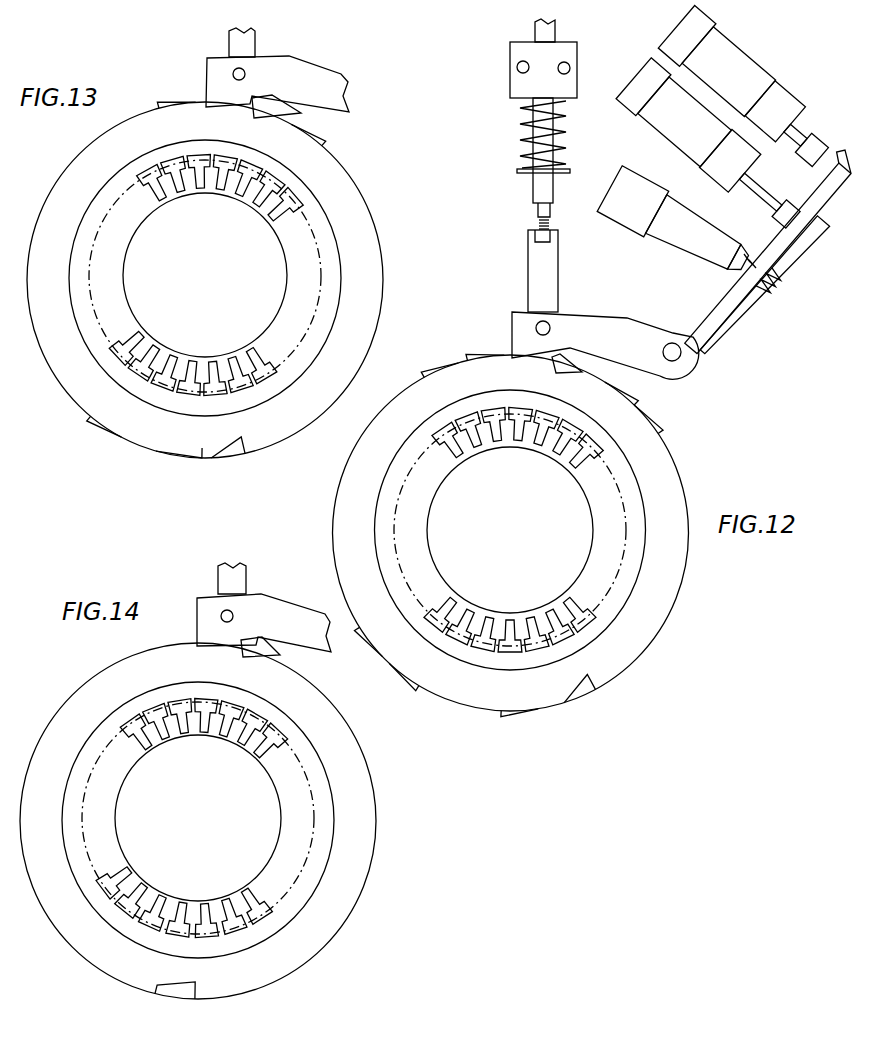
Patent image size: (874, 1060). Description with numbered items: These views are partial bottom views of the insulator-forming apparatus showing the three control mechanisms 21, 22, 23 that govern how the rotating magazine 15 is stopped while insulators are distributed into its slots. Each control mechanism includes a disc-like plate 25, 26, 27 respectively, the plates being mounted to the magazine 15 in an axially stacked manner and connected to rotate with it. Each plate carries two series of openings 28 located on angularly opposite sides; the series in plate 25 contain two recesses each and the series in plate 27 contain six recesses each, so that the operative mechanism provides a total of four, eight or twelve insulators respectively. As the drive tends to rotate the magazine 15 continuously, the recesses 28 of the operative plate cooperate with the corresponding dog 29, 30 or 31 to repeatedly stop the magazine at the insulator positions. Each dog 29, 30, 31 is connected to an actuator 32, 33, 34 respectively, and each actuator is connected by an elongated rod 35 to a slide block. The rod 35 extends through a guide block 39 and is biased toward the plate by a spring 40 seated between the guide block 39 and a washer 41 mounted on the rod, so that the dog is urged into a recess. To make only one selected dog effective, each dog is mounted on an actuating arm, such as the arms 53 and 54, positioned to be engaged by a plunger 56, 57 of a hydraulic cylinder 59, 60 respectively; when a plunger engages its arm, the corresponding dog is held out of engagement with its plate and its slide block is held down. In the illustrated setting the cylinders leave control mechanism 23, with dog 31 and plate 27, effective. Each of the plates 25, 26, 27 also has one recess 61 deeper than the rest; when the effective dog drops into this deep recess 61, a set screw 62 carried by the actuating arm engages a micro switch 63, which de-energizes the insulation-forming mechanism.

In FIG. 13, the magazine 15 is at (247, 376).
In FIG. 12, the magazine 15 is at (588, 444).
In FIG. 14, the magazine 15 is at (264, 728).
In FIG. 14, the control mechanism 21 is at (411, 838).
In FIG. 13, the control mechanism 22 is at (389, 172).
In FIG. 12, the control mechanism 23 is at (710, 653).
In FIG. 14, the plate 25 is at (373, 760).
In FIG. 13, the plate 26 is at (263, 436).
In FIG. 12, the plate 27 is at (405, 384).
In FIG. 13, the openings 28 is at (262, 118).
In FIG. 12, the openings 28 is at (558, 367).
In FIG. 14, the openings 28 is at (248, 657).
In FIG. 14, the dog 29 is at (262, 608).
In FIG. 13, the dog 30 is at (317, 76).
In FIG. 12, the dog 31 is at (618, 328).
In FIG. 14, the actuator 32 is at (243, 578).
In FIG. 13, the actuator 33 is at (248, 40).
In FIG. 12, the actuator 34 is at (556, 270).
In FIG. 12, the elongated rod 35 is at (553, 196).
In FIG. 12, the guide block 39 is at (572, 54).
In FIG. 12, the spring 40 is at (566, 128).
In FIG. 12, the washer 41 is at (571, 172).
In FIG. 12, the actuating arm 53 is at (806, 248).
In FIG. 12, the actuating arm 54 is at (838, 152).
In FIG. 12, the plunger 56 is at (776, 200).
In FIG. 12, the plunger 57 is at (806, 128).
In FIG. 12, the hydraulic cylinder 59 is at (646, 130).
In FIG. 12, the hydraulic cylinder 60 is at (752, 62).
In FIG. 13, the recess 61 is at (236, 448).
In FIG. 12, the recess 61 is at (586, 690).
In FIG. 14, the recess 61 is at (182, 1006).
In FIG. 12, the set screw 62 is at (782, 288).
In FIG. 12, the micro switch 63 is at (693, 235).